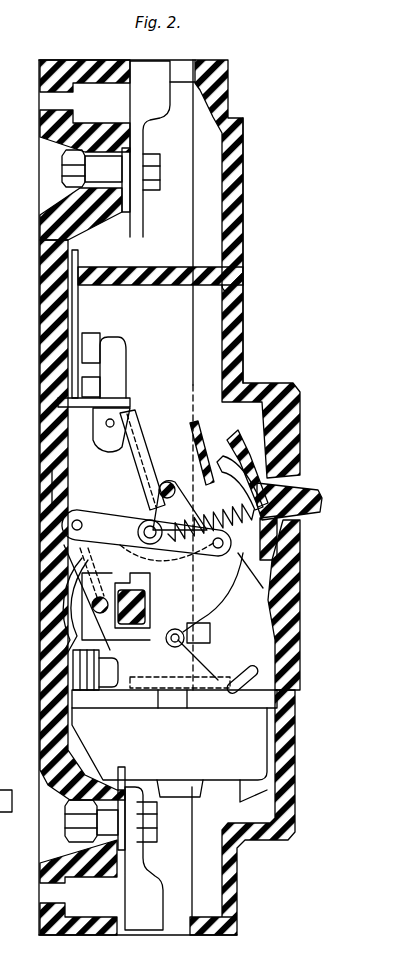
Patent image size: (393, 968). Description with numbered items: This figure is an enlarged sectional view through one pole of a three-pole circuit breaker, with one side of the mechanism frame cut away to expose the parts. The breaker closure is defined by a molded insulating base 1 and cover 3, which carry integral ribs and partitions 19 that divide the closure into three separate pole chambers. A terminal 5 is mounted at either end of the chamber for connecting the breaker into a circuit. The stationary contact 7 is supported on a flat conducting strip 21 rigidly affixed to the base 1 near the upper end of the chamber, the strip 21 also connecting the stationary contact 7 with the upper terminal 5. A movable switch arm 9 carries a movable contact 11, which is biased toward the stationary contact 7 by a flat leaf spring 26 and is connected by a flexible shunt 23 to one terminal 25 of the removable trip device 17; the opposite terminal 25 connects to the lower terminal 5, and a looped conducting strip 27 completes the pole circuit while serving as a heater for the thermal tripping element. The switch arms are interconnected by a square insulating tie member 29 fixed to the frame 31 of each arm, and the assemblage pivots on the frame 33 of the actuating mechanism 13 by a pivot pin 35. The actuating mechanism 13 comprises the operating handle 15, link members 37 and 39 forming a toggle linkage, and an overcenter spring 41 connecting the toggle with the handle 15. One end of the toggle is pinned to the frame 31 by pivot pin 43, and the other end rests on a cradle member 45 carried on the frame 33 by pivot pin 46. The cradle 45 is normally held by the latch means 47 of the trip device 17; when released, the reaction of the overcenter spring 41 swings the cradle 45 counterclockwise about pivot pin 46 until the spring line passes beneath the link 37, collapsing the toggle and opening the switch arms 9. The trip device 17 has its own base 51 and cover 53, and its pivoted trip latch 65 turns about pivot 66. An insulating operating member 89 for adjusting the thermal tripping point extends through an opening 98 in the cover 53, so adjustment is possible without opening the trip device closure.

The base 1 is at (40, 320).
The cover 3 is at (240, 178).
The terminals 5 is at (156, 99).
The stationary contacts 7 is at (88, 338).
The movable switch arms 9 is at (87, 597).
The movable contact 11 is at (115, 372).
The actuating mechanism 13 is at (180, 434).
The operating handle 15 is at (314, 506).
The electro-responsive trip device 17 is at (192, 739).
The ribs and partitions 19 is at (205, 148).
The flat strip 21 is at (78, 302).
The flexible shunt 23 is at (58, 600).
The terminals of the trip device 25 is at (99, 664).
The flat leaf spring 26 is at (52, 492).
The looped conducting strip 27 is at (105, 712).
The square tie member 29 is at (148, 592).
The frame of the switch arm 31 is at (70, 545).
The frame of the actuating mechanism 33 is at (137, 462).
The pivot pin 35 is at (92, 606).
The link member 37 is at (167, 557).
The link member 39 is at (125, 512).
The overcenter spring 41 is at (242, 470).
The pivot pin 43 is at (72, 524).
The cradle member 45 is at (218, 583).
The pivot pin 46 is at (168, 482).
The latch means 47 is at (212, 651).
The base of the trip device 51 is at (263, 700).
The cover of the trip device 53 is at (250, 735).
The trip latch 65 is at (205, 673).
The pivot of the trip latch 66 is at (188, 634).
The operating member 89 is at (258, 787).
The opening 98 is at (5, 843).